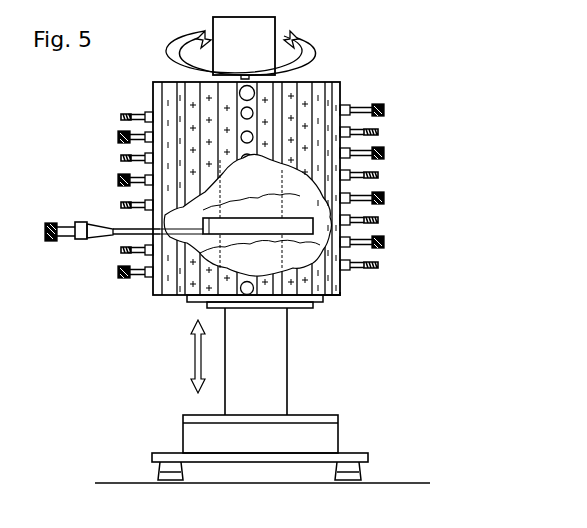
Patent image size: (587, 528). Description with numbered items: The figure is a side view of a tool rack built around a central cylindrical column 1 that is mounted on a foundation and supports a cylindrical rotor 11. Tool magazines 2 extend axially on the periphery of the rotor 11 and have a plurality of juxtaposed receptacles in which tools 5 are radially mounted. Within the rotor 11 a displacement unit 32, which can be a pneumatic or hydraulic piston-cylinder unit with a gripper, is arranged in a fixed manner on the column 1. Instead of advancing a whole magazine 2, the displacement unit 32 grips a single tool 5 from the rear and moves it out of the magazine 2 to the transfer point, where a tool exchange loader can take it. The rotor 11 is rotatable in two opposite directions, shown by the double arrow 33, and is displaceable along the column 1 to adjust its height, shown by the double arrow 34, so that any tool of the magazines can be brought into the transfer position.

The column 1 is at (276, 363).
The tool magazine 2 is at (155, 292).
The tool 5 is at (62, 226).
The rotor 11 is at (346, 308).
The displacement unit 32 is at (278, 230).
The double arrow for rotary movement 33 is at (300, 42).
The double arrow for axial movement 34 is at (190, 359).